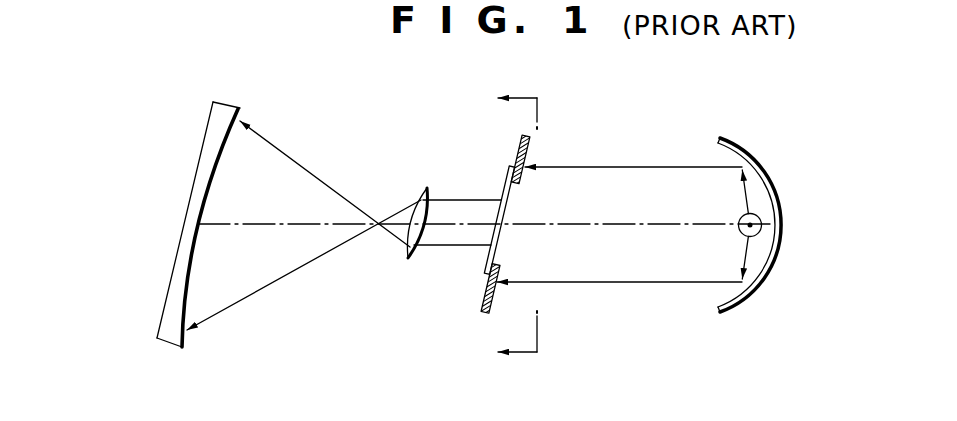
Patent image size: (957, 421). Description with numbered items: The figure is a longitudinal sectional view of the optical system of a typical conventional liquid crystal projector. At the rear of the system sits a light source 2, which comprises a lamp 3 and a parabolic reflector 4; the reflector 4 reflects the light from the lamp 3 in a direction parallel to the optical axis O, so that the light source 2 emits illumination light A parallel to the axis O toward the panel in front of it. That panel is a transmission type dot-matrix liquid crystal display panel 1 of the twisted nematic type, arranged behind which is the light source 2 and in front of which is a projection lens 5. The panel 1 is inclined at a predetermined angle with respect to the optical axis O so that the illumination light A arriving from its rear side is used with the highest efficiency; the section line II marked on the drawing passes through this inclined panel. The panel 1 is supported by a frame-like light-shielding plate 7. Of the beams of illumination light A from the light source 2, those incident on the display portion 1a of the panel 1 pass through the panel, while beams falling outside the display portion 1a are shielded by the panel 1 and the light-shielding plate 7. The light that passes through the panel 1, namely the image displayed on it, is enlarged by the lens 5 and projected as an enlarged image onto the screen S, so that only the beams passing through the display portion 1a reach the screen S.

The screen S is at (178, 255).
The projection lens 5 is at (427, 188).
The transmission type dot-matrix liquid crystal display panel 1 is at (509, 177).
The display portion 1a is at (500, 232).
The frame-like light-shielding plate 7 is at (484, 300).
The section line II- II is at (507, 226).
The illumination light A is at (633, 165).
The optical axis O is at (618, 227).
The lamp 3 is at (741, 217).
The parabolic reflector 4 is at (770, 268).
The light source 2 is at (740, 305).